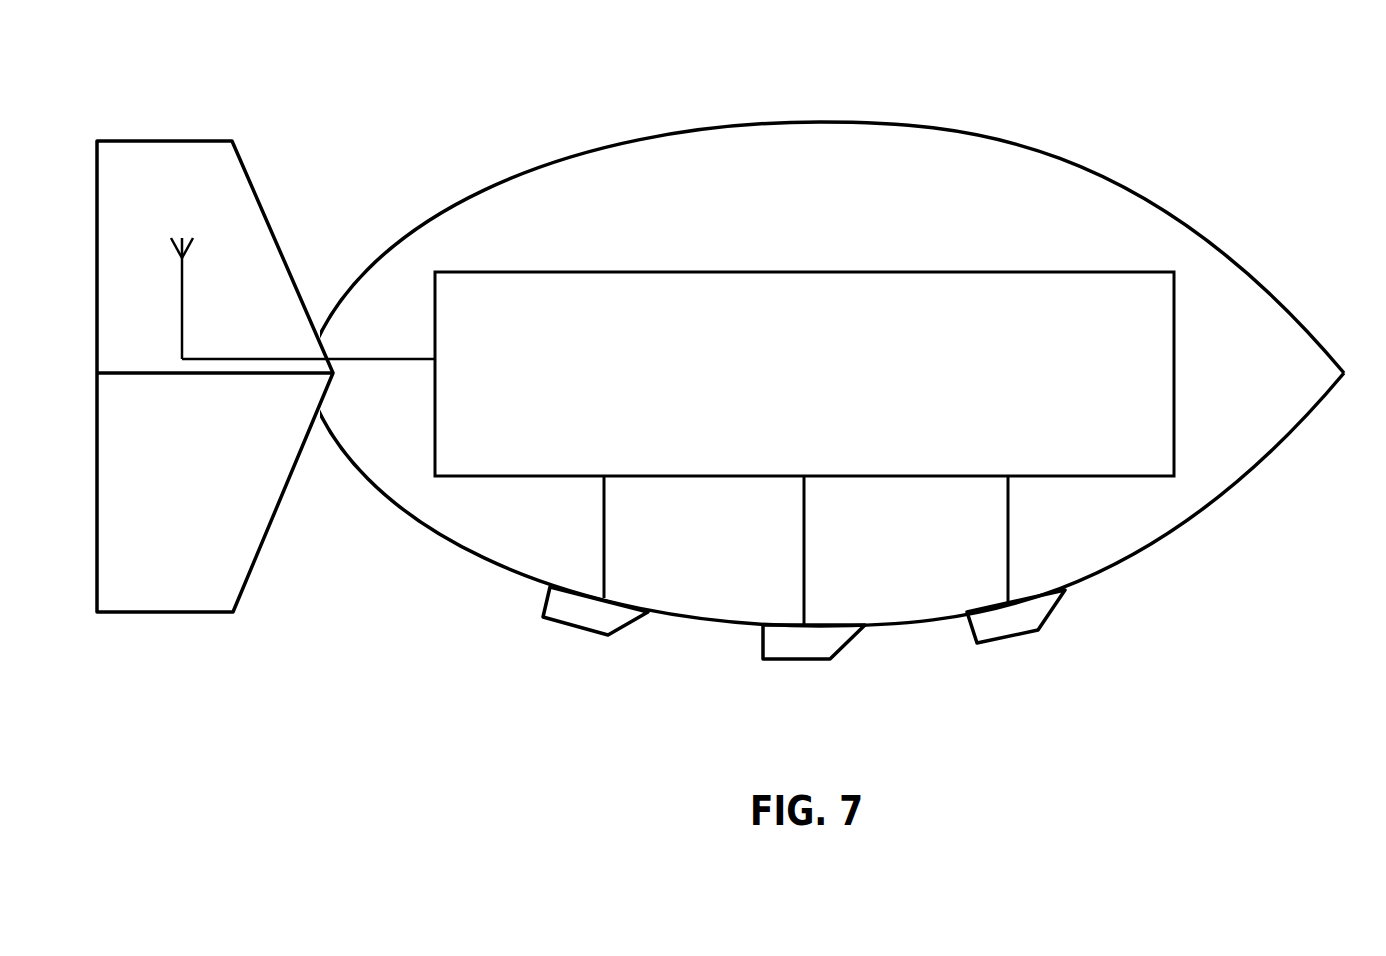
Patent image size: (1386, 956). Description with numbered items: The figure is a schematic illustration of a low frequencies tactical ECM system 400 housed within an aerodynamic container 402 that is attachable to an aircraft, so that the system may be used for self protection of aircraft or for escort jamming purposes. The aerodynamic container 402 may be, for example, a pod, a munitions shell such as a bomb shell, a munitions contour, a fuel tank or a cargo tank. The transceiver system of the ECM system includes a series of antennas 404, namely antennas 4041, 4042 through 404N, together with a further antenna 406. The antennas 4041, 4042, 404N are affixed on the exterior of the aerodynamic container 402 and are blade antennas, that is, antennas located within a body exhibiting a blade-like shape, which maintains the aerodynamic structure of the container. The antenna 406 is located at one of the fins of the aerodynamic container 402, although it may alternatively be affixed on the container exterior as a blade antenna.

The low frequencies tactical ECM system 400 is at (769, 272).
The aerodynamic container 402 is at (817, 122).
The antennas 404 is at (840, 595).
The first antenna 4041 is at (568, 627).
The second antenna 4042 is at (789, 660).
The Nth antenna 404N is at (990, 645).
The antenna 406 is at (180, 282).